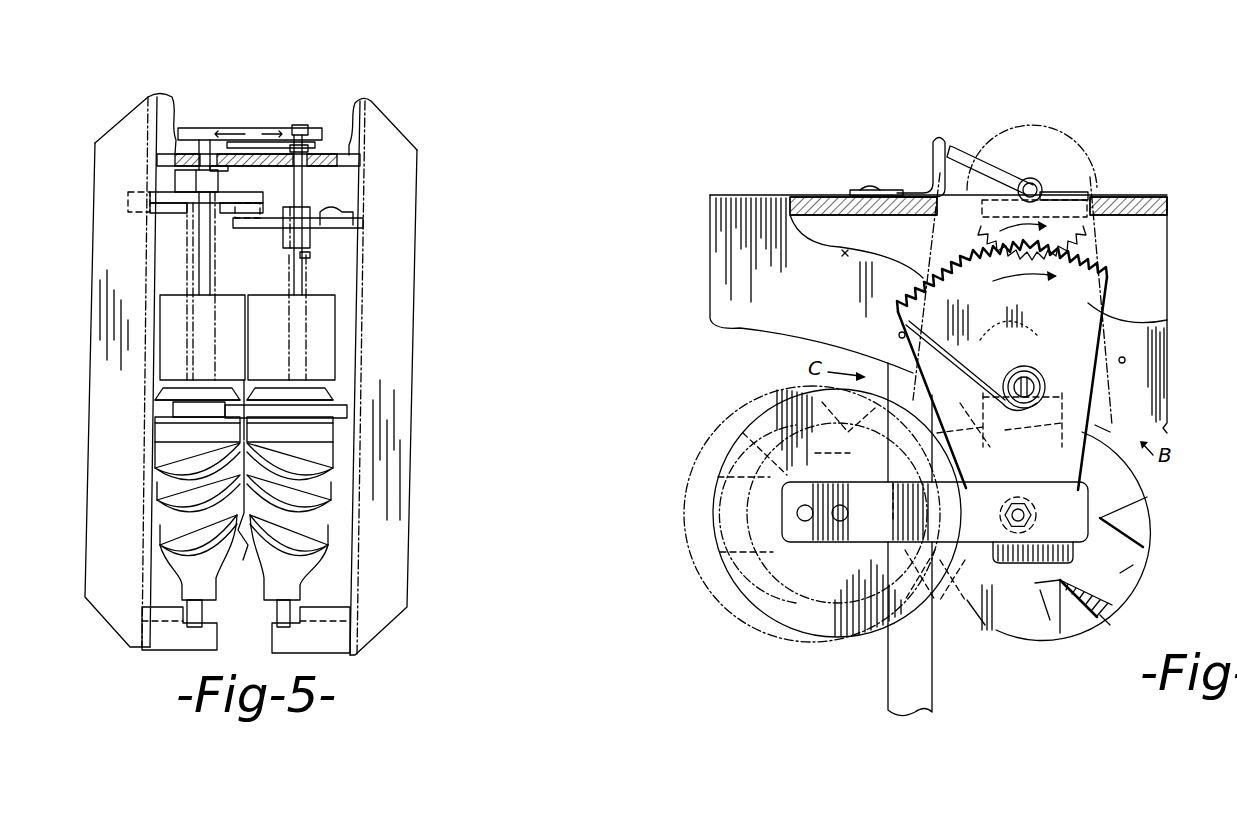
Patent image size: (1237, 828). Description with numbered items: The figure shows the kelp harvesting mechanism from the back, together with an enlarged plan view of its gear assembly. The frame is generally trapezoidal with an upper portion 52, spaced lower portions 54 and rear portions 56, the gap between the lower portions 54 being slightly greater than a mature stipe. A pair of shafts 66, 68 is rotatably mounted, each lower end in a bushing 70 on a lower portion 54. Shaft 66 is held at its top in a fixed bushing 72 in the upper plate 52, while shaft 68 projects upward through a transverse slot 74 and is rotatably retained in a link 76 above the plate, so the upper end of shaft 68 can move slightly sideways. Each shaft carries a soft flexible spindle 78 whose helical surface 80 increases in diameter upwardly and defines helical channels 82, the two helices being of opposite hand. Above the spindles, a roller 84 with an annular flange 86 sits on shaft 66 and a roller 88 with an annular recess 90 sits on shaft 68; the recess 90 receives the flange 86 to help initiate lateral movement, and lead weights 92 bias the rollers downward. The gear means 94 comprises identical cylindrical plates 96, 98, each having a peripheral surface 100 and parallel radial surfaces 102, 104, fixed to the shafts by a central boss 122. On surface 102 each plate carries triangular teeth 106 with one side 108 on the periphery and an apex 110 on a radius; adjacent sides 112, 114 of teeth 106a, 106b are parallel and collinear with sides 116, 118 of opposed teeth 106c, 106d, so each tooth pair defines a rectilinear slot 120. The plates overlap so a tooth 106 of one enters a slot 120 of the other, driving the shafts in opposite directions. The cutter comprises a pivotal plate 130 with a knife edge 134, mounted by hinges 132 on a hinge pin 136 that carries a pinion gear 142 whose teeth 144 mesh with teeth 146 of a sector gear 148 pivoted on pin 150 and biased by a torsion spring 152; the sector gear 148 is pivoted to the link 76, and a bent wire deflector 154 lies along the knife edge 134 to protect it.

In FIG. 5, the upper portion 52 is at (352, 163).
In FIG. 5, the lower portions 54 is at (322, 643).
In FIG. 5, the rear portions 56 is at (397, 378).
In FIG. 5, the shaft 66 is at (300, 287).
In FIG. 5, the shaft 68 is at (199, 255).
In FIG. 7, the shaft 68 is at (842, 506).
In FIG. 5, the bushing 70 is at (273, 632).
In FIG. 5, the fixed bushing 72 is at (323, 147).
In FIG. 5, the slot 74 is at (205, 168).
In FIG. 7, the slot 74 is at (817, 528).
In FIG. 5, the link 76 is at (273, 128).
In FIG. 7, the link 76 is at (1058, 525).
In FIG. 5, the spindle 78 is at (170, 579).
In FIG. 5, the helical surface 80 is at (198, 530).
In FIG. 5, the helical channels 82 is at (223, 523).
In FIG. 5, the roller 84 is at (320, 430).
In FIG. 5, the annular flange 86 is at (347, 410).
In FIG. 5, the roller 88 is at (173, 430).
In FIG. 5, the annular recess 90 is at (167, 408).
In FIG. 5, the lead weights 92 is at (233, 298).
In FIG. 5, the gear means 94 is at (341, 235).
In FIG. 7, the gear means 94 is at (1167, 493).
In FIG. 5, the cylindrical plate 96 is at (271, 235).
In FIG. 7, the cylindrical plate 96 is at (1133, 565).
In FIG. 5, the cylindrical plate 98 is at (240, 189).
In FIG. 7, the cylindrical plate 98 is at (788, 620).
In FIG. 7, the peripheral surface 100 is at (855, 640).
In FIG. 5, the radial surface 102 is at (363, 223).
In FIG. 7, the radial surface 102 is at (1117, 580).
In FIG. 5, the radial surface 104 is at (213, 193).
In FIG. 5, the circumferential teeth 106 is at (228, 214).
In FIG. 7, the circumferential teeth 106 is at (997, 563).
In FIG. 7, the tooth 106a is at (1107, 428).
In FIG. 7, the tooth 106b is at (1011, 436).
In FIG. 7, the tooth 106c is at (1080, 630).
In FIG. 7, the tooth 106d is at (967, 607).
In FIG. 7, the side 108 is at (1087, 632).
In FIG. 7, the apex 110 is at (1060, 580).
In FIG. 7, the side 112 is at (1033, 491).
In FIG. 7, the side 114 is at (999, 425).
In FIG. 7, the side 116 is at (1043, 623).
In FIG. 7, the side 118 is at (987, 630).
In FIG. 7, the rectilinear slot 120 is at (1063, 392).
In FIG. 5, the central boss 122 is at (217, 157).
In FIG. 7, the pivotal plate 130 is at (1008, 125).
In FIG. 7, the hinges 132 is at (1080, 193).
In FIG. 7, the knife edge 134 is at (975, 150).
In FIG. 7, the hinge pin 136 is at (1032, 188).
In FIG. 7, the pinion gear 142 is at (1075, 236).
In FIG. 7, the peripheral teeth 144 is at (1075, 248).
In FIG. 7, the teeth 146 is at (1107, 267).
In FIG. 7, the sector gear 148 is at (1087, 300).
In FIG. 7, the pivot pin 150 is at (1040, 370).
In FIG. 7, the torsion spring 152 is at (985, 362).
In FIG. 7, the deflector 154 is at (923, 160).